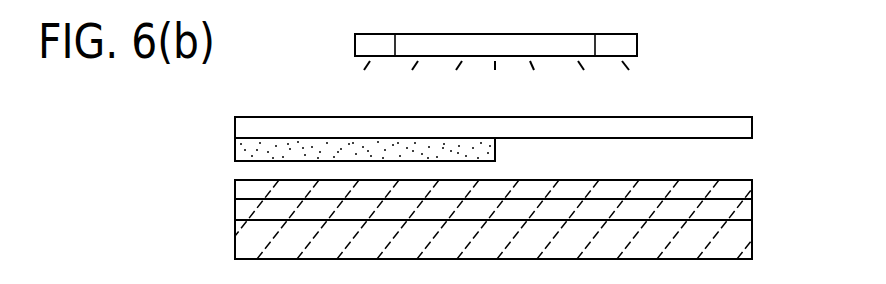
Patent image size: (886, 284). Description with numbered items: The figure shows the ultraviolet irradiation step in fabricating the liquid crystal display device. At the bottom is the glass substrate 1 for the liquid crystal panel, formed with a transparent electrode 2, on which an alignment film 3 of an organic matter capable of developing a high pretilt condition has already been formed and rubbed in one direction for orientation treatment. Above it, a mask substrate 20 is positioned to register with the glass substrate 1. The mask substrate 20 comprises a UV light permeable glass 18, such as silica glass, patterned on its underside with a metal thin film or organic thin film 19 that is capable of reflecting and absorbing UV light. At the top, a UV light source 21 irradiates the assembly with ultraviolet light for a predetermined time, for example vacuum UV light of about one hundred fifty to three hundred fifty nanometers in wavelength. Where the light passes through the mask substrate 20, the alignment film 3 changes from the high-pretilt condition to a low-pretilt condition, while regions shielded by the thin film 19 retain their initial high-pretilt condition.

The glass substrate 1 is at (745, 238).
The transparent electrode 2 is at (745, 209).
The alignment film 3 is at (745, 188).
The UV light permeable glass 18 is at (752, 126).
The metal thin film or organic thin film 19 is at (235, 148).
The mask substrate 20 is at (706, 113).
The UV light source 21 is at (355, 43).